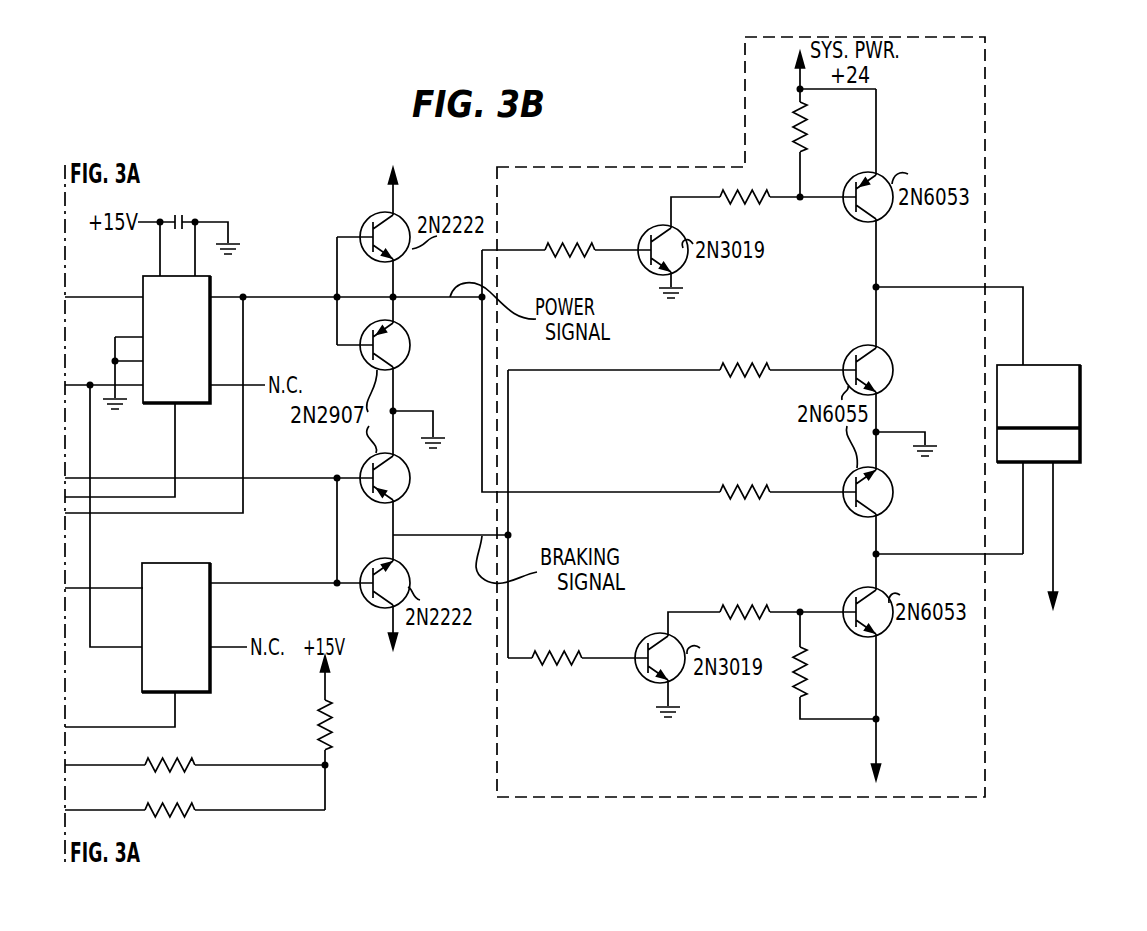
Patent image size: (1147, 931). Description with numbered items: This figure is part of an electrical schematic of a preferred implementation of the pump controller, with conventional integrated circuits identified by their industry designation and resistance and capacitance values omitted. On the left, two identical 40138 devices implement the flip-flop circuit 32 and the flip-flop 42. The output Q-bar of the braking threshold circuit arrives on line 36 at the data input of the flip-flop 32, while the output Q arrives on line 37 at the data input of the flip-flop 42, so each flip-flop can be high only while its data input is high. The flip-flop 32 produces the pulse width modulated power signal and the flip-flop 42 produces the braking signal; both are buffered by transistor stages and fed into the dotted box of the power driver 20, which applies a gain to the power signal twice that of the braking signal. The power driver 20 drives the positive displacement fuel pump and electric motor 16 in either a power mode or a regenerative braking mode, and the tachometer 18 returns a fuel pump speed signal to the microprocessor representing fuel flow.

The line 37 is at (95, 296).
The flip-flop 42 is at (145, 278).
The line 36 is at (118, 588).
The flip-flop circuit 32 is at (206, 563).
The positive displacement fuel pump and electric motor 16 is at (1081, 395).
The tachometer 18 is at (1062, 462).
The power driver 20 is at (985, 748).